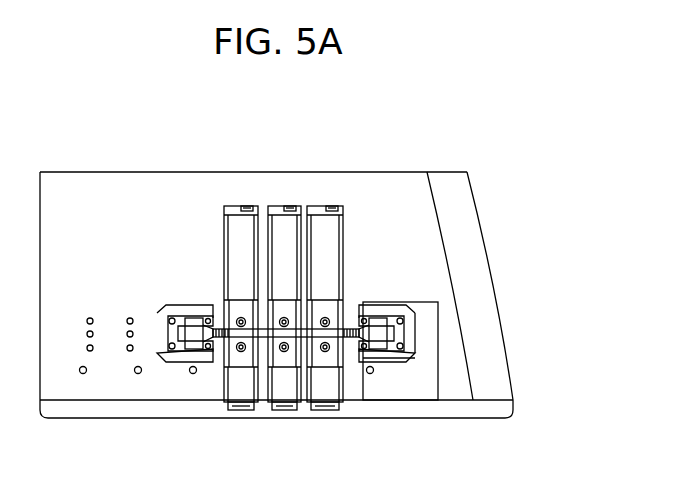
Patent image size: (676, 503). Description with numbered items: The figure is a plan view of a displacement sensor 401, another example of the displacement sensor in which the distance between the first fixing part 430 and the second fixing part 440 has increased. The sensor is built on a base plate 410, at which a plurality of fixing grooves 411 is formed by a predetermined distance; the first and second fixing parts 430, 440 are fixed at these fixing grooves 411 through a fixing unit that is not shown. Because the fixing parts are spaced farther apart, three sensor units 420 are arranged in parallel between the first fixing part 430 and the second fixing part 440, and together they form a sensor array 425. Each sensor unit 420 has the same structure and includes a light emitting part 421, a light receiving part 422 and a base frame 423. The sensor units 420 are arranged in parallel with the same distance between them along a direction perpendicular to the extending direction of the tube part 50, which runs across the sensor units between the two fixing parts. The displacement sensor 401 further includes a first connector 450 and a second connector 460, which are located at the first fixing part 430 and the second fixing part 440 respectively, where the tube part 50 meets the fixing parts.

The displacement sensor 401 is at (495, 160).
The base plate 410 is at (427, 348).
The fixing grooves 411 is at (415, 328).
The sensor unit 420 is at (375, 308).
The light emitting part 421 is at (324, 318).
The light receiving part 422 is at (335, 320).
The base frame 423 is at (328, 230).
The sensor array 425 is at (334, 292).
The first fixing part 430 is at (408, 356).
The second fixing part 440 is at (170, 356).
The first connector 450 is at (378, 340).
The second connector 460 is at (193, 340).
The tube part 50 is at (258, 338).